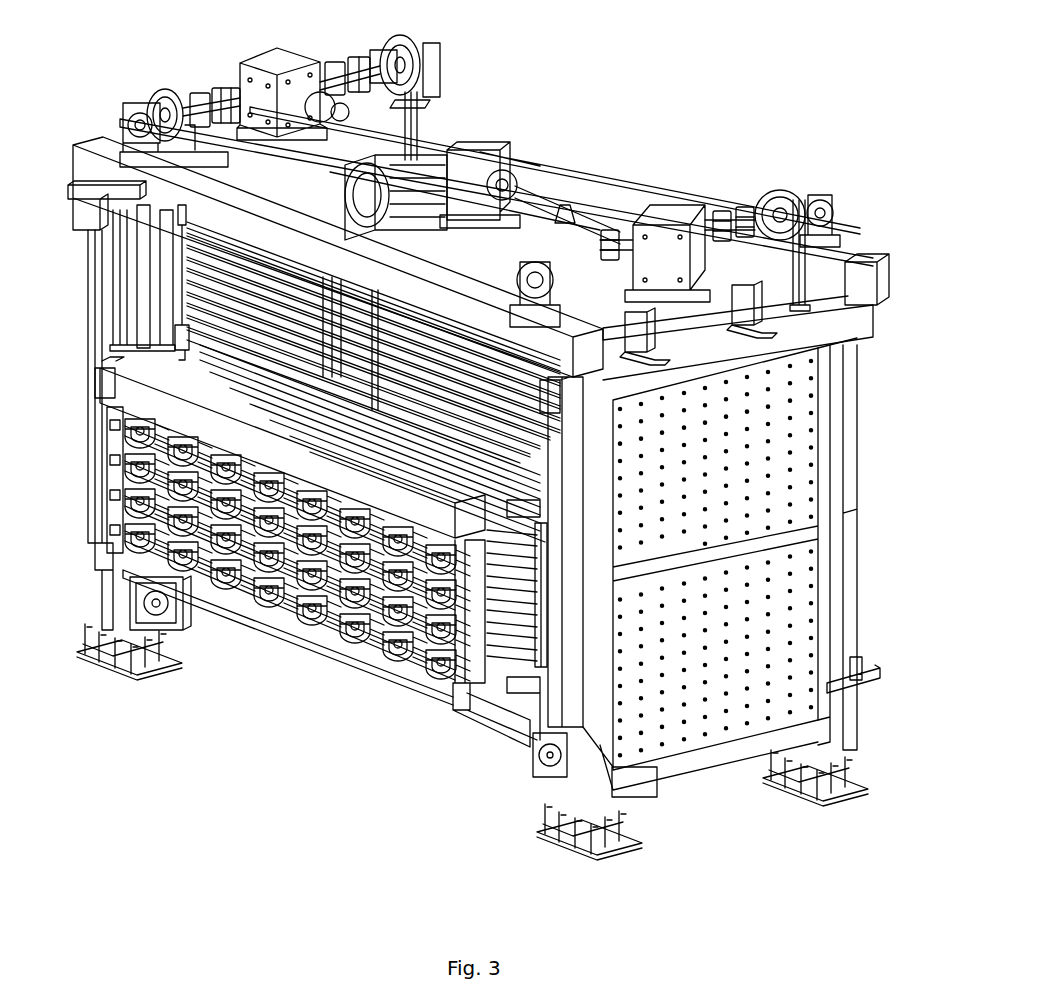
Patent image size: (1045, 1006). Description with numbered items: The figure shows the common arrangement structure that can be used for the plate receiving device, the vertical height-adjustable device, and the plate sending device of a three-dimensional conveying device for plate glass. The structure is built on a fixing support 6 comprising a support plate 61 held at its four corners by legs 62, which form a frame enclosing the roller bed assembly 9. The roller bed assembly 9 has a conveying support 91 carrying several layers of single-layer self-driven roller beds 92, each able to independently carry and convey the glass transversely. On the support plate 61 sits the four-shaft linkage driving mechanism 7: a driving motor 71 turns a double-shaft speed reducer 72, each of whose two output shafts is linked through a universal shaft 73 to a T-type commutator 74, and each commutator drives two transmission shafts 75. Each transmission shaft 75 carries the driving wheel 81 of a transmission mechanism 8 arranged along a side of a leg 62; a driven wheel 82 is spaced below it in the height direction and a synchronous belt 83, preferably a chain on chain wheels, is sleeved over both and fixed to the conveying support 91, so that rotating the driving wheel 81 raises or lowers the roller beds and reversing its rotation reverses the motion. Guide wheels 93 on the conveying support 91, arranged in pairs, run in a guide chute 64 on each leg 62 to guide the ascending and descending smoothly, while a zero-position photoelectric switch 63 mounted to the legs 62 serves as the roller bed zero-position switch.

The fixing support 6 is at (860, 263).
The four-shaft linkage driving mechanism 7 is at (818, 200).
The transmission mechanism 8 is at (803, 270).
The roller bed assembly 9 is at (282, 640).
The support plate 61 is at (602, 187).
The leg 62 is at (833, 578).
The zero-position photoelectric switch 63 is at (853, 672).
The guide chute 64 is at (107, 302).
The driving motor 71 is at (410, 160).
The double-shaft speed reducer 72 is at (483, 150).
The universal shaft 73 is at (543, 193).
The T-type commutator 74 is at (675, 215).
The transmission shaft 75 is at (767, 220).
The driving wheel 81 is at (157, 92).
The driven wheel 82 is at (147, 610).
The synchronous belt 83 is at (110, 252).
The conveying support 91 is at (150, 397).
The single-layer self-driven roller bed 92 is at (107, 450).
The guide wheel 93 is at (102, 337).